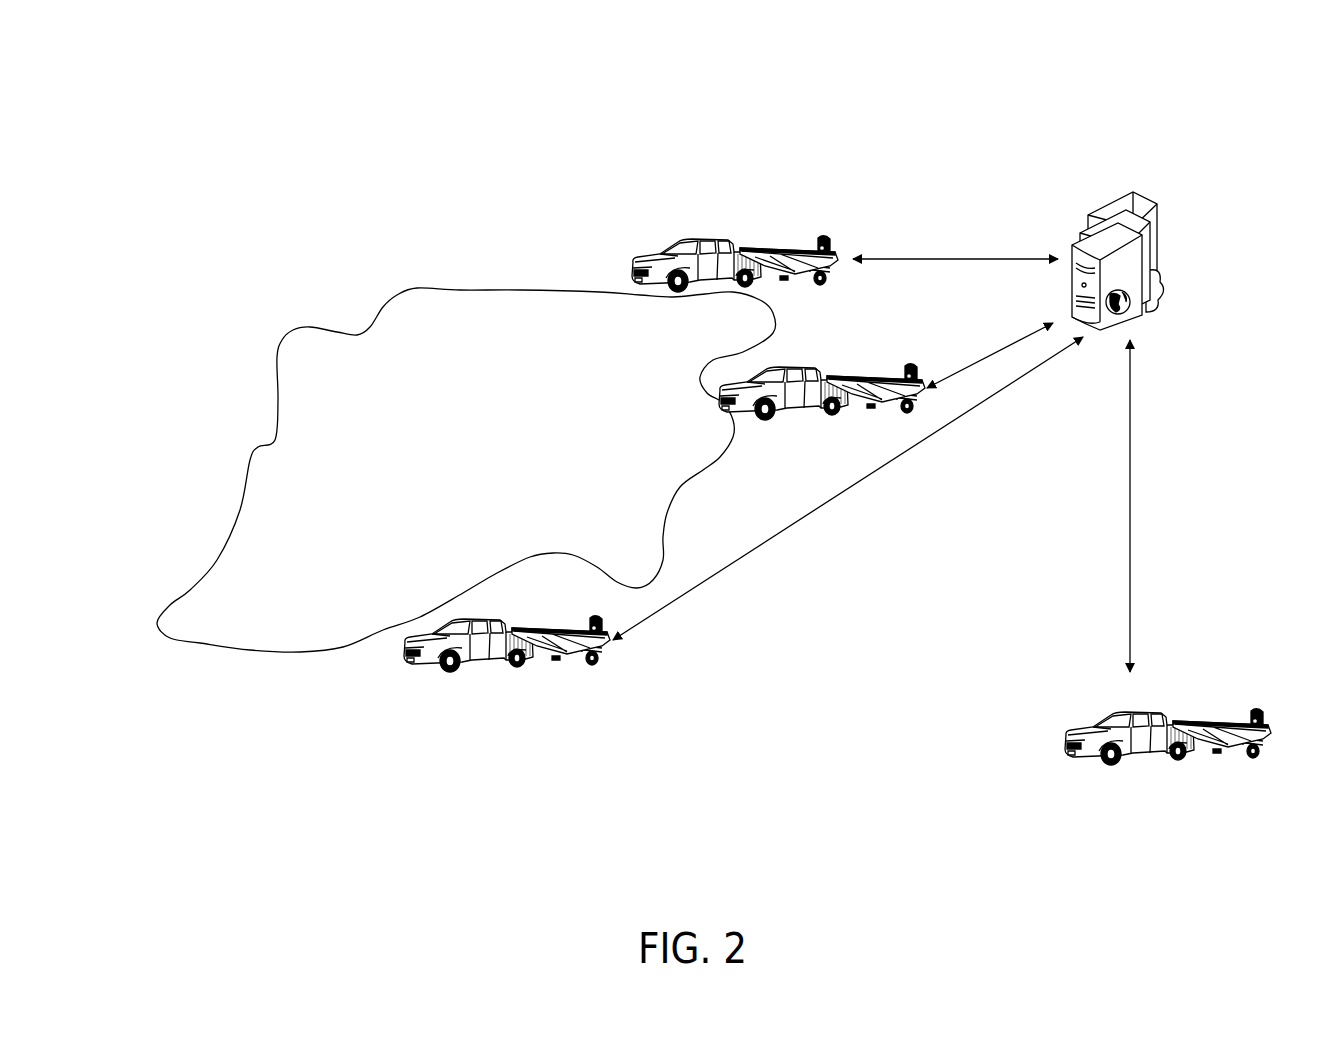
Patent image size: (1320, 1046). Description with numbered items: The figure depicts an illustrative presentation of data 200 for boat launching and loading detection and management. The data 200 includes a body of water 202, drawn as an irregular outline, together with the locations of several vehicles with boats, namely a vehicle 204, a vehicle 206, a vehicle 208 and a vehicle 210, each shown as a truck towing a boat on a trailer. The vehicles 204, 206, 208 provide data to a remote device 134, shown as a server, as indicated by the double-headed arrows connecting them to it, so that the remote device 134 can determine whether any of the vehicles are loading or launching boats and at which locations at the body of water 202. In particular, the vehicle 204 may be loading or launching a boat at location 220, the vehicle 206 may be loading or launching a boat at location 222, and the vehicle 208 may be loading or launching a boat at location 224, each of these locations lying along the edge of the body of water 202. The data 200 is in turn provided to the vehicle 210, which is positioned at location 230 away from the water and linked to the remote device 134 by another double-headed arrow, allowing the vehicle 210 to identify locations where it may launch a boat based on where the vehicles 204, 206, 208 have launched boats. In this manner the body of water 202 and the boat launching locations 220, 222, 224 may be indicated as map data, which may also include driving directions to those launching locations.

The data 200 is at (1216, 58).
The body of water 202 is at (479, 482).
The vehicle 204 is at (697, 238).
The vehicle 206 is at (780, 362).
The vehicle 208 is at (468, 615).
The vehicle 210 is at (1133, 712).
The remote device 134 is at (1157, 206).
The location 220 is at (614, 284).
The location 222 is at (743, 433).
The location 224 is at (384, 647).
The location 230 is at (1096, 689).